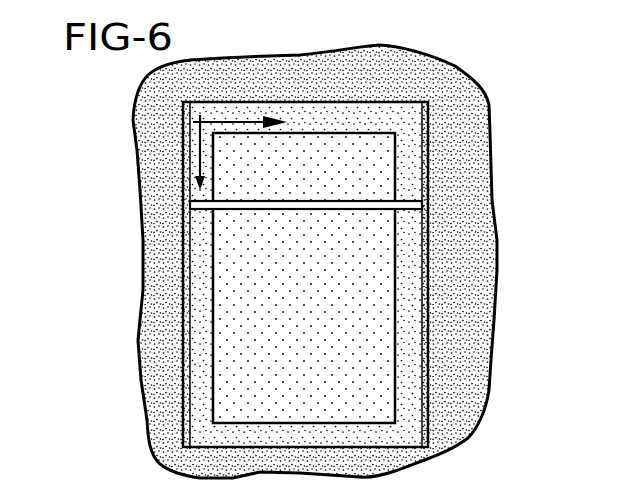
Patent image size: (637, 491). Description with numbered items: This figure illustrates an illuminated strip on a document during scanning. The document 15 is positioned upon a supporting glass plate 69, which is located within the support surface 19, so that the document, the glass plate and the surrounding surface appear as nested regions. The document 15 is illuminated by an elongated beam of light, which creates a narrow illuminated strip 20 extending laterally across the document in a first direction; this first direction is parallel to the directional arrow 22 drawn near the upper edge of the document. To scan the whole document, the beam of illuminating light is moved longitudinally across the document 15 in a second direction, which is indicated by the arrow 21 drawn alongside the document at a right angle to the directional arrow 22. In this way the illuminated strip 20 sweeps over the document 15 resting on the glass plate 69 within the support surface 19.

The support surface 19 is at (381, 46).
The supporting glass plate 69 is at (397, 114).
The document 15 is at (367, 175).
The illuminated strip 20 is at (382, 207).
The arrow 21 is at (200, 143).
The directional arrow 22 is at (235, 122).